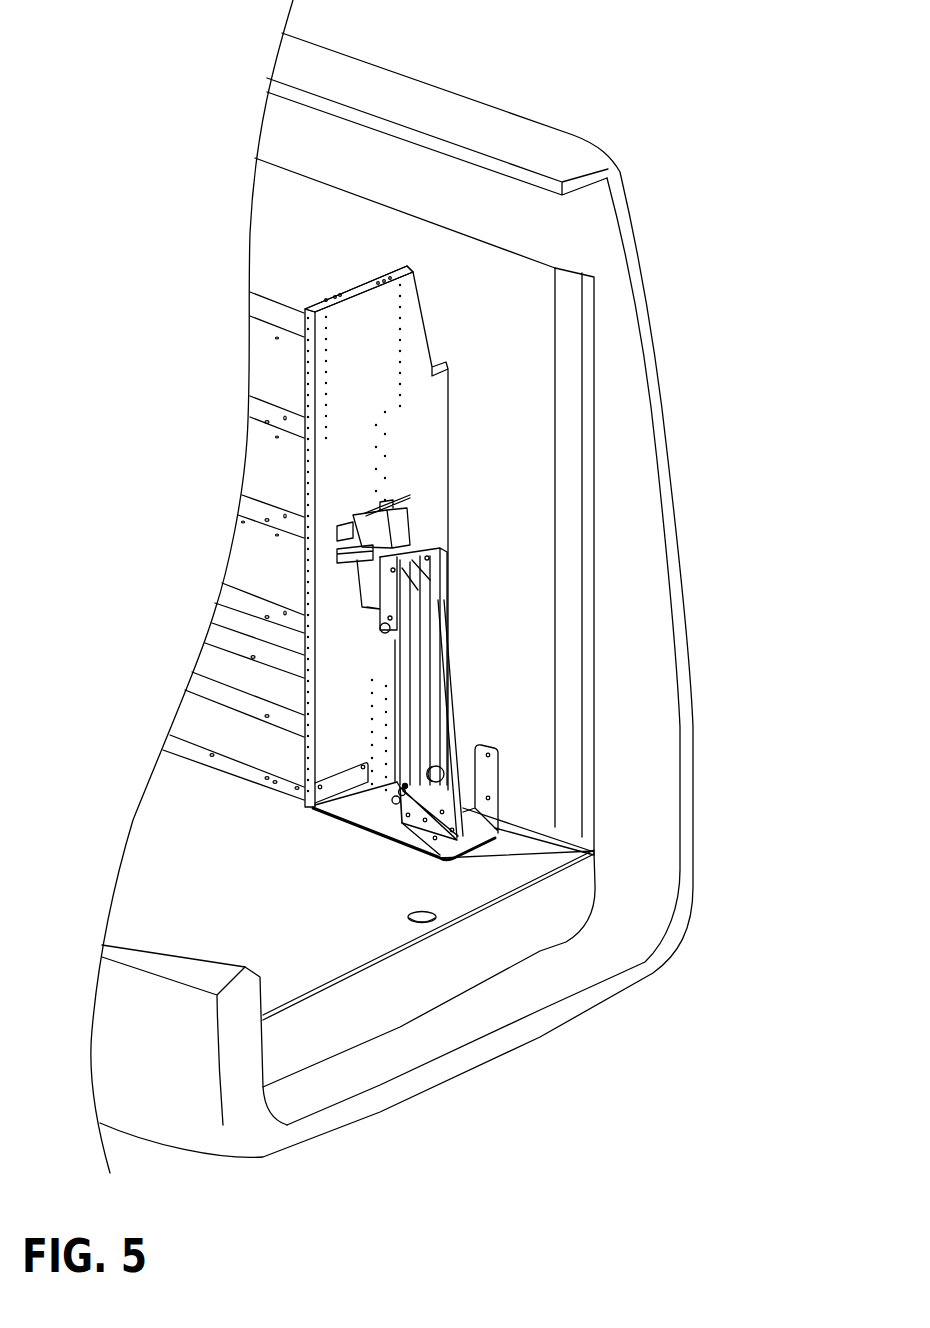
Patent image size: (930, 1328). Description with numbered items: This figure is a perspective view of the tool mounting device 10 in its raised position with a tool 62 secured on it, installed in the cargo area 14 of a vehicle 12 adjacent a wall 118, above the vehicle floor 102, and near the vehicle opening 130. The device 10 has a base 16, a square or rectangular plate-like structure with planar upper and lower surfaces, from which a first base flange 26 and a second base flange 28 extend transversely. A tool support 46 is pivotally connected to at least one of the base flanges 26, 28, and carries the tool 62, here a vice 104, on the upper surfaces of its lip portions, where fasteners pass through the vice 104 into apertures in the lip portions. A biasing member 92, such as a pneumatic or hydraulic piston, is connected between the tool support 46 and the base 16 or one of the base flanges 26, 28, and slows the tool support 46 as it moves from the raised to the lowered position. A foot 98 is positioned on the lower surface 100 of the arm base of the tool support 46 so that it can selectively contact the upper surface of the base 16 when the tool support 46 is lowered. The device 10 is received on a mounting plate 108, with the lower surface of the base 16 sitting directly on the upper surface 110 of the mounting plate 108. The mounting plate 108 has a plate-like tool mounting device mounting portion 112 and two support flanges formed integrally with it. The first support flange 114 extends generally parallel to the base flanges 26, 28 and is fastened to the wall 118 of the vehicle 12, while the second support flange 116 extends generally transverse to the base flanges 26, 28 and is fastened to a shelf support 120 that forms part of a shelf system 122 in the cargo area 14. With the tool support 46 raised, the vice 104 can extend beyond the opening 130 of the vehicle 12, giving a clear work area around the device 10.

The vehicle 12 is at (640, 258).
The cargo area 14 is at (531, 323).
The wall 118 is at (527, 722).
The vehicle floor 102 is at (231, 909).
The first base flange 26 is at (493, 827).
The base 16 is at (462, 853).
The opening 130 is at (387, 1052).
The second support flange 116 is at (307, 802).
The shelf support 120 is at (425, 473).
The shelf system 122 is at (345, 292).
The tool 62 is at (412, 513).
The vice 104 is at (358, 520).
The lower surface 100 is at (430, 603).
The tool mounting device 10 is at (438, 630).
The tool support 46 is at (430, 660).
The biasing member 92 is at (447, 757).
The foot 98 is at (442, 774).
The first support flange 114 is at (500, 787).
The upper surface 110 is at (352, 818).
The mounting plate 108 is at (370, 837).
The tool mounting device mounting portion 112 is at (402, 838).
The second base flange 28 is at (427, 837).